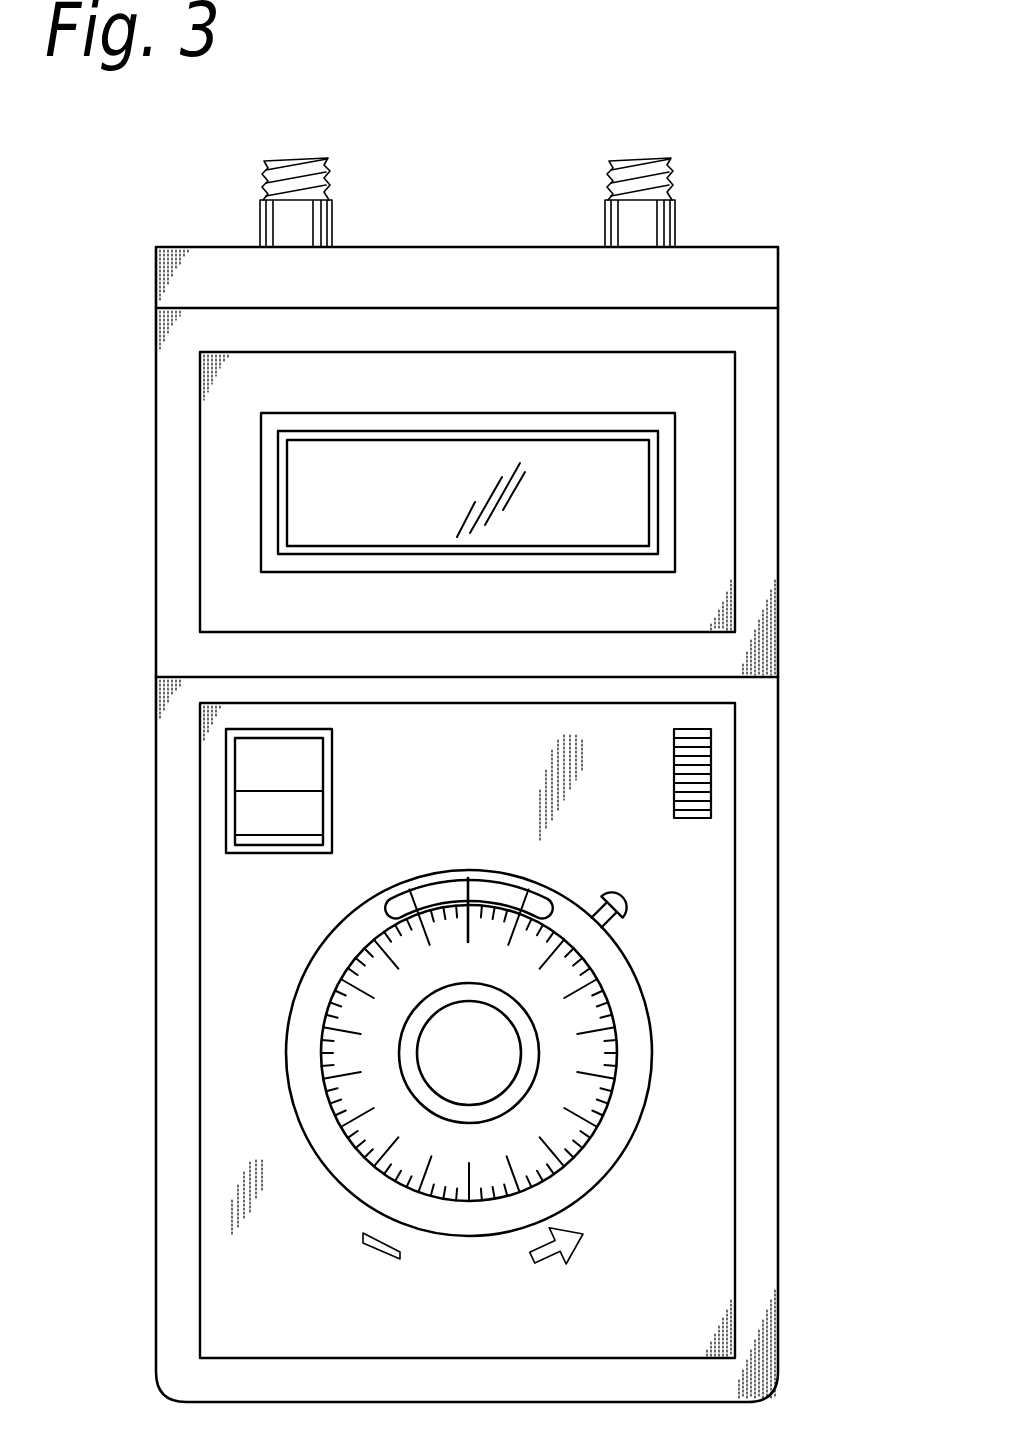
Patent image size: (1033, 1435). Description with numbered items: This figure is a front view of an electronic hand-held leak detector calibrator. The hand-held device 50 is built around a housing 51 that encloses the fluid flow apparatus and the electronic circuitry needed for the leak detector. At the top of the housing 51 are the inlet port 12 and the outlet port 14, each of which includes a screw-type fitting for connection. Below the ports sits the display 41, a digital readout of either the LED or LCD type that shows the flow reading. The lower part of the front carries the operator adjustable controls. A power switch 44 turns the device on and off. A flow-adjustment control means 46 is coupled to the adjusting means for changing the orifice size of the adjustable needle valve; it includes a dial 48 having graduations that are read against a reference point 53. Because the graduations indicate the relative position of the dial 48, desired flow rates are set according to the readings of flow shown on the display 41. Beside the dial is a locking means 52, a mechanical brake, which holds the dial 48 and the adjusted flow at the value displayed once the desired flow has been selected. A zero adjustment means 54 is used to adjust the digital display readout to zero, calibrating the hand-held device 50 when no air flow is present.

The inlet port 12 is at (258, 221).
The outlet port 14 is at (676, 223).
The display 41 is at (627, 497).
The power switch 44 is at (268, 771).
The flow-adjustment control means 46 is at (305, 1044).
The dial 48 is at (577, 1052).
The hand-held device 50 is at (127, 1316).
The housing 51 is at (176, 869).
The locking means 52 is at (628, 903).
The reference point 53 is at (467, 893).
The zero adjustment means 54 is at (695, 769).